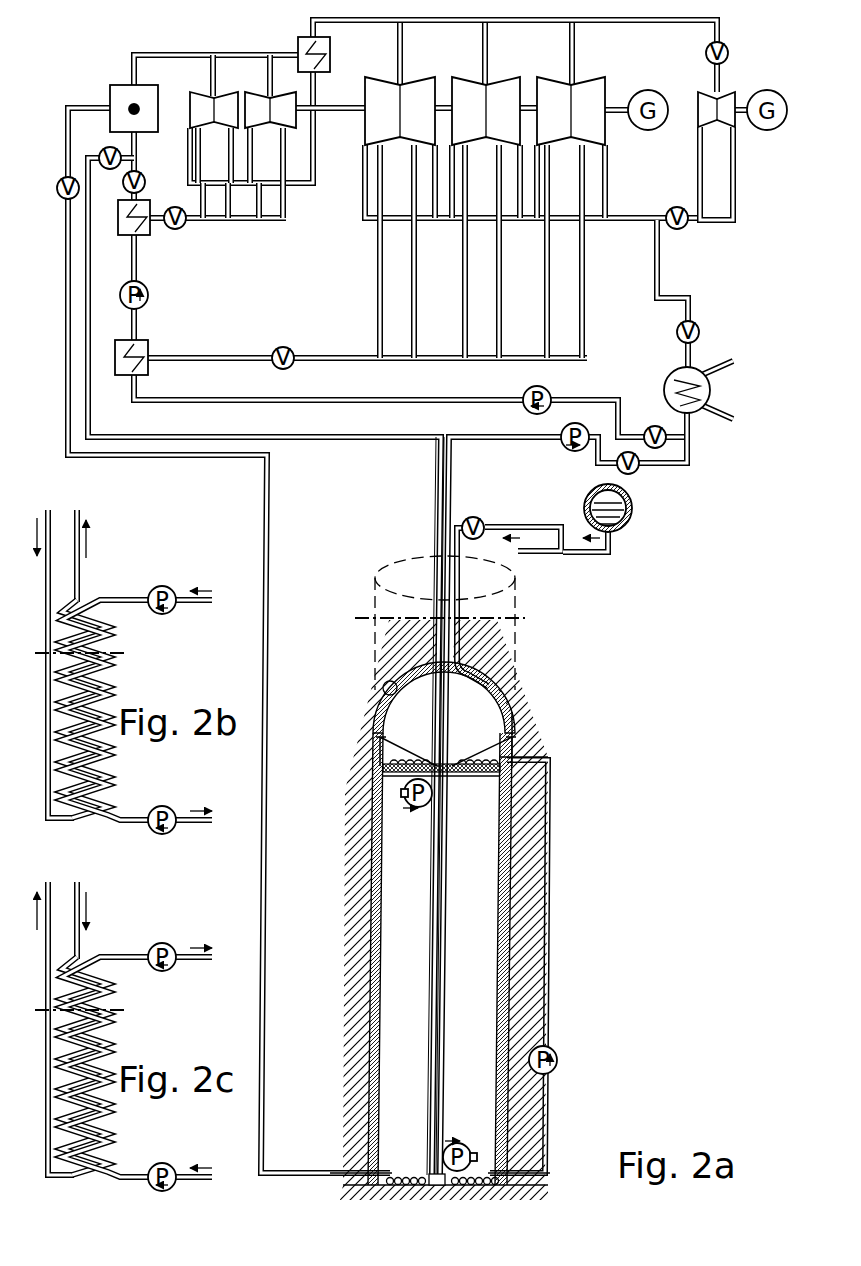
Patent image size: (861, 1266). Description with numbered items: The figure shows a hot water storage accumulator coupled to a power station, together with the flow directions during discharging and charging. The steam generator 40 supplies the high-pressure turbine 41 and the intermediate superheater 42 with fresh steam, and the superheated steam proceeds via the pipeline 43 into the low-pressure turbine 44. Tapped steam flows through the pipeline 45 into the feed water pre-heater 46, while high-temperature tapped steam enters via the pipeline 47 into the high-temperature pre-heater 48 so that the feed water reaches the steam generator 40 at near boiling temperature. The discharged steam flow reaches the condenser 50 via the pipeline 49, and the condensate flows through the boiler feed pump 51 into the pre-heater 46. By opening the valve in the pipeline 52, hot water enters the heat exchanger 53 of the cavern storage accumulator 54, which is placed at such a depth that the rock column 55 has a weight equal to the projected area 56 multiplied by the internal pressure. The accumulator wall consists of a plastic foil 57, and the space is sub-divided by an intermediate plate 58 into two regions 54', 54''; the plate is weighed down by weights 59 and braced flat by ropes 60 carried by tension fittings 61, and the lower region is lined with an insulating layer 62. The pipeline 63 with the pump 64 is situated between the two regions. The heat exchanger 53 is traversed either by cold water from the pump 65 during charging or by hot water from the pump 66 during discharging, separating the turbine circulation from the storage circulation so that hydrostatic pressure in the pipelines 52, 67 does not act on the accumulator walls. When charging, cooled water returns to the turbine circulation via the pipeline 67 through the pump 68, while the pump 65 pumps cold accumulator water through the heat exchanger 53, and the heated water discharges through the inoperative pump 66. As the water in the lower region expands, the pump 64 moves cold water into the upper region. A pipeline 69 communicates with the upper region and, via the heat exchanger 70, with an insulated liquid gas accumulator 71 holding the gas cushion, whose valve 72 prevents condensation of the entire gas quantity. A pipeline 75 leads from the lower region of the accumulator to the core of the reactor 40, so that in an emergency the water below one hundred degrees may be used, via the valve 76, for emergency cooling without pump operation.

In FIG. 2A, the steam generator 40 is at (118, 88).
In FIG. 2A, the high-pressure turbine 41 is at (194, 100).
In FIG. 2A, the intermediate superheater 42 is at (333, 49).
In FIG. 2A, the pipeline 43 is at (423, 24).
In FIG. 2A, the low-pressure turbine 44 is at (370, 128).
In FIG. 2A, the pipeline 45 is at (378, 299).
In FIG. 2A, the feed water pre-heater 46 is at (150, 346).
In FIG. 2A, the pipeline 47 is at (243, 224).
In FIG. 2A, the high-temperature pre-heater 48 is at (148, 236).
In FIG. 2A, the pipeline 49 is at (659, 273).
In FIG. 2A, the condenser 50 is at (670, 376).
In FIG. 2A, the boiler feed pump 51 is at (526, 391).
In FIG. 2A, the pipeline 52 is at (91, 417).
In FIG. 2B, the pipeline 52 is at (82, 572).
In FIG. 2C, the pipeline 52 is at (84, 885).
In FIG. 2A, the heat exchanger 53 is at (428, 972).
In FIG. 2B, the heat exchanger 53 is at (134, 683).
In FIG. 2C, the heat exchanger 53 is at (134, 1040).
In FIG. 2A, the cavern storage accumulator 54 is at (415, 910).
In FIG. 2A, the region 54' is at (477, 694).
In FIG. 2A, the region 54'' is at (552, 780).
In FIG. 2A, the rock column 55 is at (376, 636).
In FIG. 2A, the projected area 56 is at (386, 558).
In FIG. 2A, the plastic foil 57 is at (378, 690).
In FIG. 2A, the intermediate plate 58 is at (460, 778).
In FIG. 2A, the weights 59 is at (406, 760).
In FIG. 2A, the ropes 60 is at (480, 760).
In FIG. 2A, the tension fittings 61 is at (515, 722).
In FIG. 2A, the insulating layer 62 is at (371, 896).
In FIG. 2A, the pipeline 63 is at (551, 908).
In FIG. 2A, the pump 64 is at (551, 1075).
In FIG. 2A, the pump 65 is at (464, 1144).
In FIG. 2B, the pump 65 is at (151, 811).
In FIG. 2C, the pump 65 is at (151, 1168).
In FIG. 2A, the pump 66 is at (406, 806).
In FIG. 2B, the pump 66 is at (170, 589).
In FIG. 2C, the pump 66 is at (170, 946).
In FIG. 2A, the pipeline 67 is at (478, 436).
In FIG. 2B, the pipeline 67 is at (52, 525).
In FIG. 2C, the pipeline 67 is at (52, 885).
In FIG. 2A, the pump 68 is at (562, 446).
In FIG. 2A, the pipeline 69 is at (455, 560).
In FIG. 2A, the heat exchanger 70 is at (540, 550).
In FIG. 2A, the insulated liquid gas accumulator 71 is at (622, 531).
In FIG. 2A, the valve 72 is at (475, 516).
In FIG. 2A, the pipeline 75 is at (270, 523).
In FIG. 2A, the valve 76 is at (68, 205).